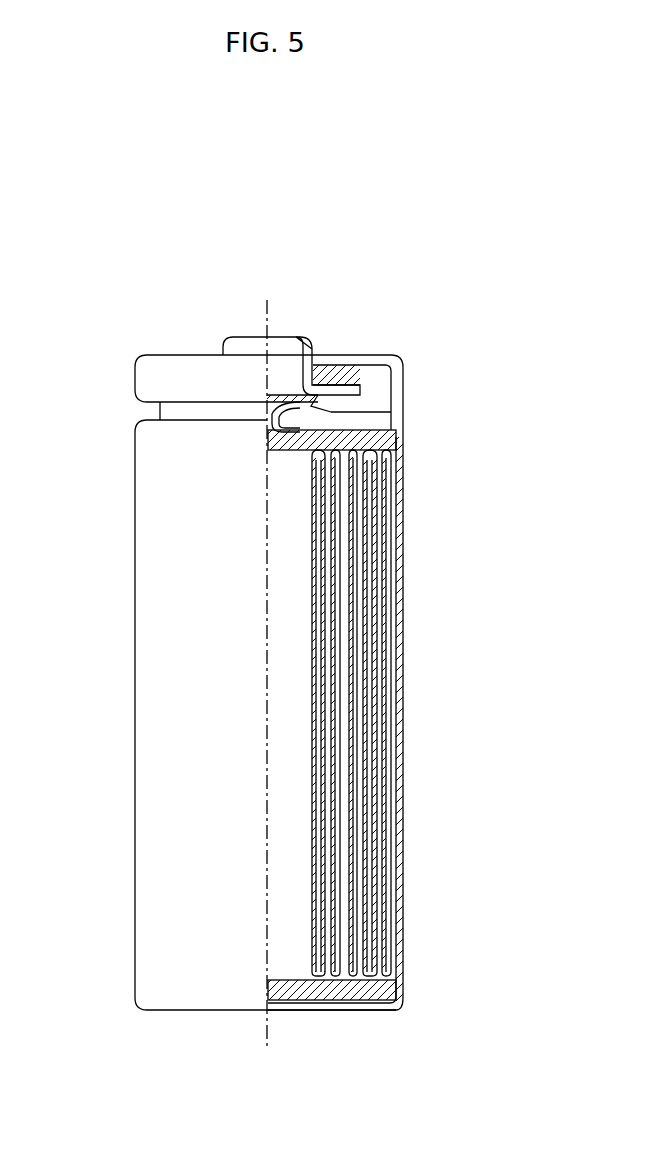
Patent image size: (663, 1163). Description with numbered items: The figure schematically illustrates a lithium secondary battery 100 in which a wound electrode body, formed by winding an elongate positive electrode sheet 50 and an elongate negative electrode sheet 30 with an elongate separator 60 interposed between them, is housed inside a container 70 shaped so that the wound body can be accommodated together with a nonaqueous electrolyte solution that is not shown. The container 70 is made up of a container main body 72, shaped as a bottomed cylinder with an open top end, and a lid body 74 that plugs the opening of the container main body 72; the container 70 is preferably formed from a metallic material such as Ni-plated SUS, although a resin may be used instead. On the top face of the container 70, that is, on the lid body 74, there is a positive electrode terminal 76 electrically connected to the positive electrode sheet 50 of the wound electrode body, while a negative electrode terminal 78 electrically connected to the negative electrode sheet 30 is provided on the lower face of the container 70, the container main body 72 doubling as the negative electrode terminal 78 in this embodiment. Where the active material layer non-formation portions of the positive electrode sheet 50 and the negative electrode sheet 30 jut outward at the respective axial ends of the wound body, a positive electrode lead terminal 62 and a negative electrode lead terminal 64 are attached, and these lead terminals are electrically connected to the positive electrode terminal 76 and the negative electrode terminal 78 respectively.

The lithium secondary battery 100 is at (435, 299).
The container 70 is at (133, 708).
The container main body 72 is at (148, 572).
The lid body 74 is at (175, 357).
The positive electrode terminal 76 is at (283, 335).
The positive electrode lead terminal 62 is at (380, 416).
The negative electrode sheet 30 is at (383, 605).
The positive electrode sheet 50 is at (390, 560).
The separator 60 is at (383, 665).
The negative electrode lead terminal 64 is at (357, 1010).
The negative electrode terminal 78 is at (304, 1007).